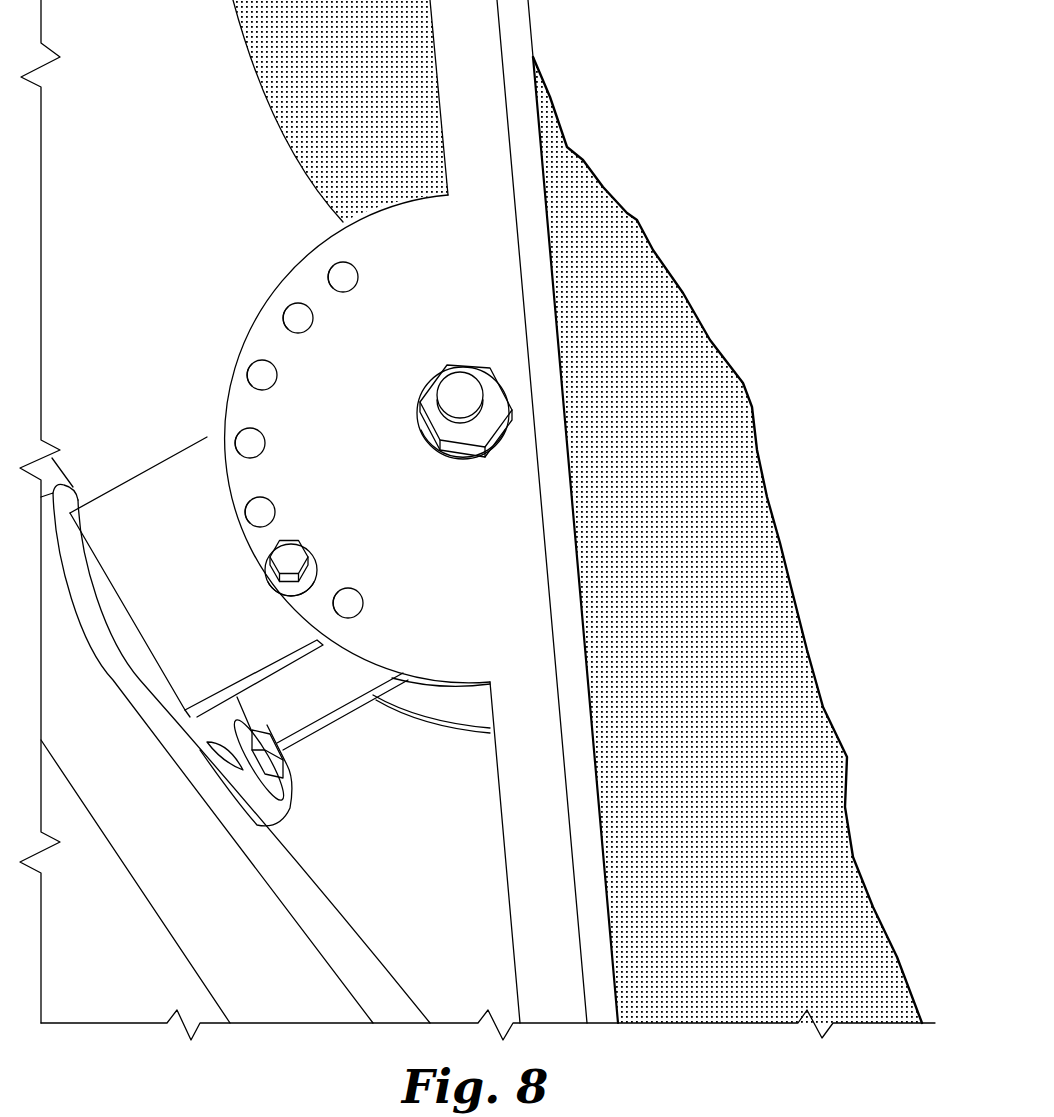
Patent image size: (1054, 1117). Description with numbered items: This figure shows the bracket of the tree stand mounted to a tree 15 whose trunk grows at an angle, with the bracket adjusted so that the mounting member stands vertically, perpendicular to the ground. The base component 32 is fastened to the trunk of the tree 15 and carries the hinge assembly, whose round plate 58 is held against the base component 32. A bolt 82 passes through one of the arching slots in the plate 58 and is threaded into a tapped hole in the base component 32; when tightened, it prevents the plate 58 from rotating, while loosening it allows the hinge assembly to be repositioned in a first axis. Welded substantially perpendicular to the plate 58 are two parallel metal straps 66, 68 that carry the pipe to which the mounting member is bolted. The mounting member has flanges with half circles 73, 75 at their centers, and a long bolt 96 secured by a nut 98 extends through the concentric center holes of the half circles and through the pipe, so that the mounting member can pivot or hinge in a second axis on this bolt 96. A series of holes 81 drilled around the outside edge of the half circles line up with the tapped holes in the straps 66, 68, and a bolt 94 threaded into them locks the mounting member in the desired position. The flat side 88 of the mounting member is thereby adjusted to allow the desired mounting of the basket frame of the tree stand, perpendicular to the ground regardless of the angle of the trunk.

The tree 15 is at (752, 620).
The base component 32 is at (365, 945).
The plate 58 is at (67, 500).
The metal strap 66 is at (167, 478).
The metal strap 68 is at (298, 707).
The half circle 73 is at (350, 240).
The half circle 75 is at (470, 708).
The holes 81 is at (328, 273).
The bolt 82 is at (292, 760).
The flat side 88 is at (592, 888).
The bolt 94 is at (277, 550).
The long bolt 96 is at (458, 392).
The nut 98 is at (450, 440).